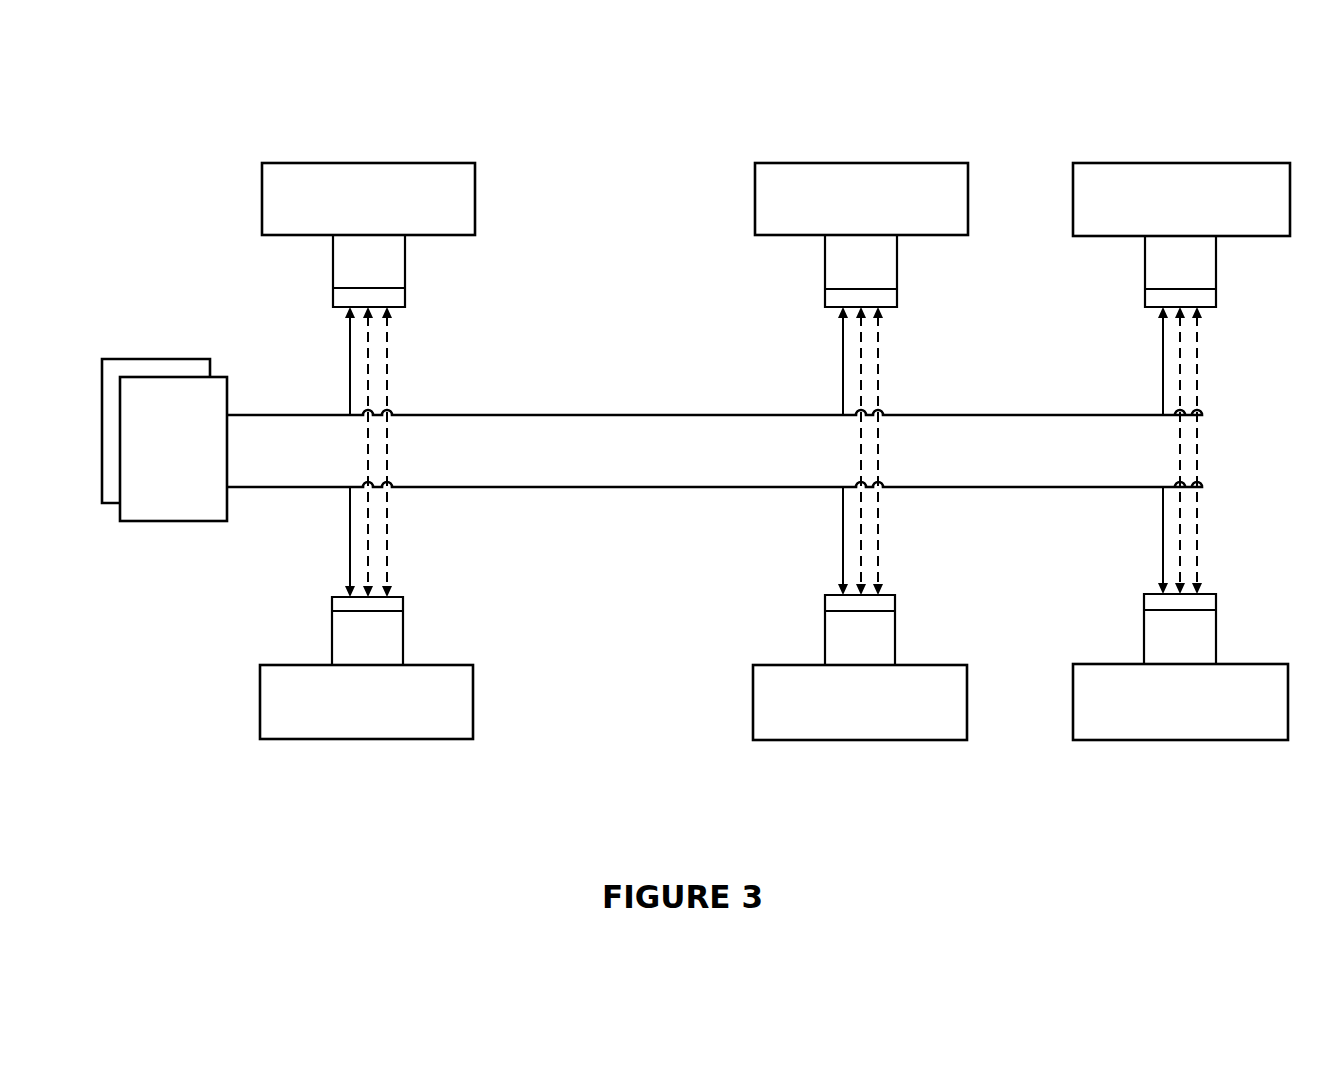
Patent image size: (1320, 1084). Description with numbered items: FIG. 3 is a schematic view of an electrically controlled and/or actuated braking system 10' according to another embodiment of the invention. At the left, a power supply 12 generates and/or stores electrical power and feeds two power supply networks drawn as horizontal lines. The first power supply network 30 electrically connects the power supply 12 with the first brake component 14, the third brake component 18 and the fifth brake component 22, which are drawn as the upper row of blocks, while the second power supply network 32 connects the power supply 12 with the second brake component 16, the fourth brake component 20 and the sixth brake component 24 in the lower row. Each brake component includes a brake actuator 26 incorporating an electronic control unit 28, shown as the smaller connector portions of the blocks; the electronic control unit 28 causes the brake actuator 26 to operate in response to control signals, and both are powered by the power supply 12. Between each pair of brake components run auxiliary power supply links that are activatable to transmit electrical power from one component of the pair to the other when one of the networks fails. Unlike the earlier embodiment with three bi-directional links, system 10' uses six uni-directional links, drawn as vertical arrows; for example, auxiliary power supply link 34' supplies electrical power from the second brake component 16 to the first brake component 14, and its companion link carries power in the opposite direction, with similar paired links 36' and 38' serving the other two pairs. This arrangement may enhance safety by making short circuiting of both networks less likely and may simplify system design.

The electrically controlled and/or actuated braking system 10' is at (351, 876).
The power supply 12 is at (193, 390).
The first brake component 14 is at (413, 172).
The second brake component 16 is at (428, 720).
The third brake component 18 is at (781, 172).
The fourth brake component 20 is at (808, 727).
The fifth brake component 22 is at (1109, 172).
The sixth brake component 24 is at (1100, 725).
The brake actuator 26 is at (387, 262).
The electronic control unit 28 is at (843, 296).
The first power supply network 30 is at (714, 398).
The second power supply network 32 is at (714, 509).
The uni-directional auxiliary power supply link 34' is at (311, 456).
The uni-directional auxiliary power supply link 36' is at (804, 455).
The uni-directional auxiliary power supply link 38' is at (1123, 455).